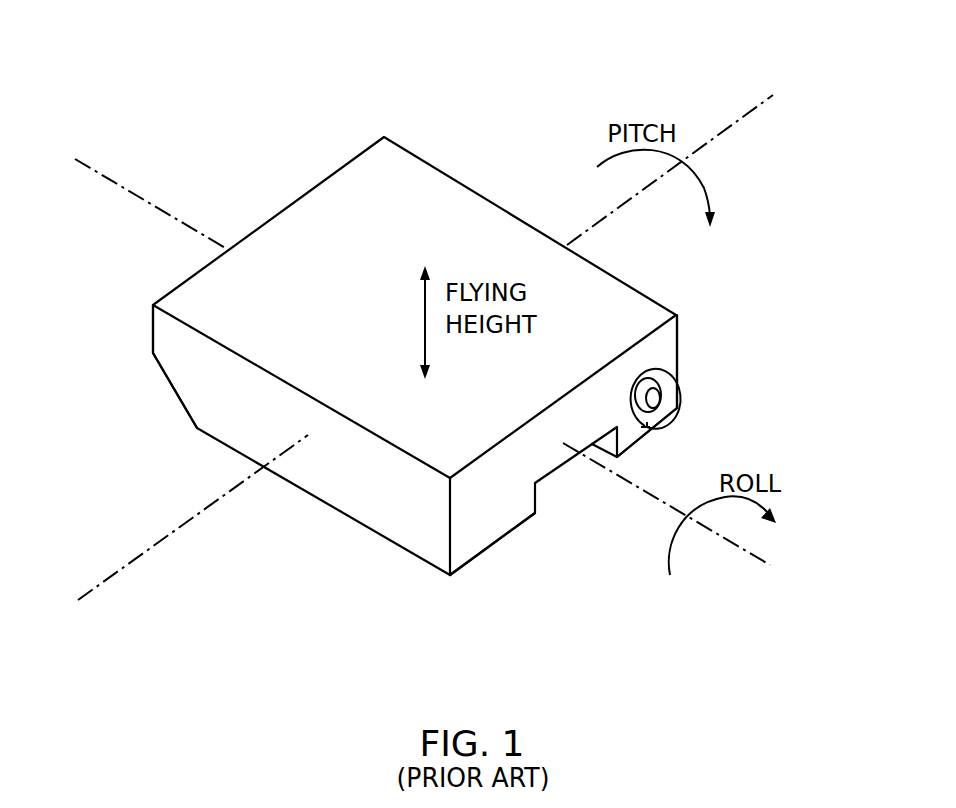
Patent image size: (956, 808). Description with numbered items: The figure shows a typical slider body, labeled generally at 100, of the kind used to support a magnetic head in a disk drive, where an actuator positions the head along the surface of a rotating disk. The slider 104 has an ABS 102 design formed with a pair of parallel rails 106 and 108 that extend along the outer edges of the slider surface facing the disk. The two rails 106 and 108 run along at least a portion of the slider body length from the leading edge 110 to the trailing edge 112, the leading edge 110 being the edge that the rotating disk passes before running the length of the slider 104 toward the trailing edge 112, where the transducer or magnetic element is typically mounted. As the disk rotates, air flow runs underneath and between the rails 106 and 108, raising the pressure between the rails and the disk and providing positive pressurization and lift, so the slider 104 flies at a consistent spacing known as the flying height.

The slider 100 is at (452, 140).
The ABS 102 is at (640, 437).
The slider 104 is at (480, 556).
The rail 106 is at (152, 327).
The rail 108 is at (678, 318).
The leading edge 110 is at (671, 378).
The trailing edge 112 is at (90, 158).